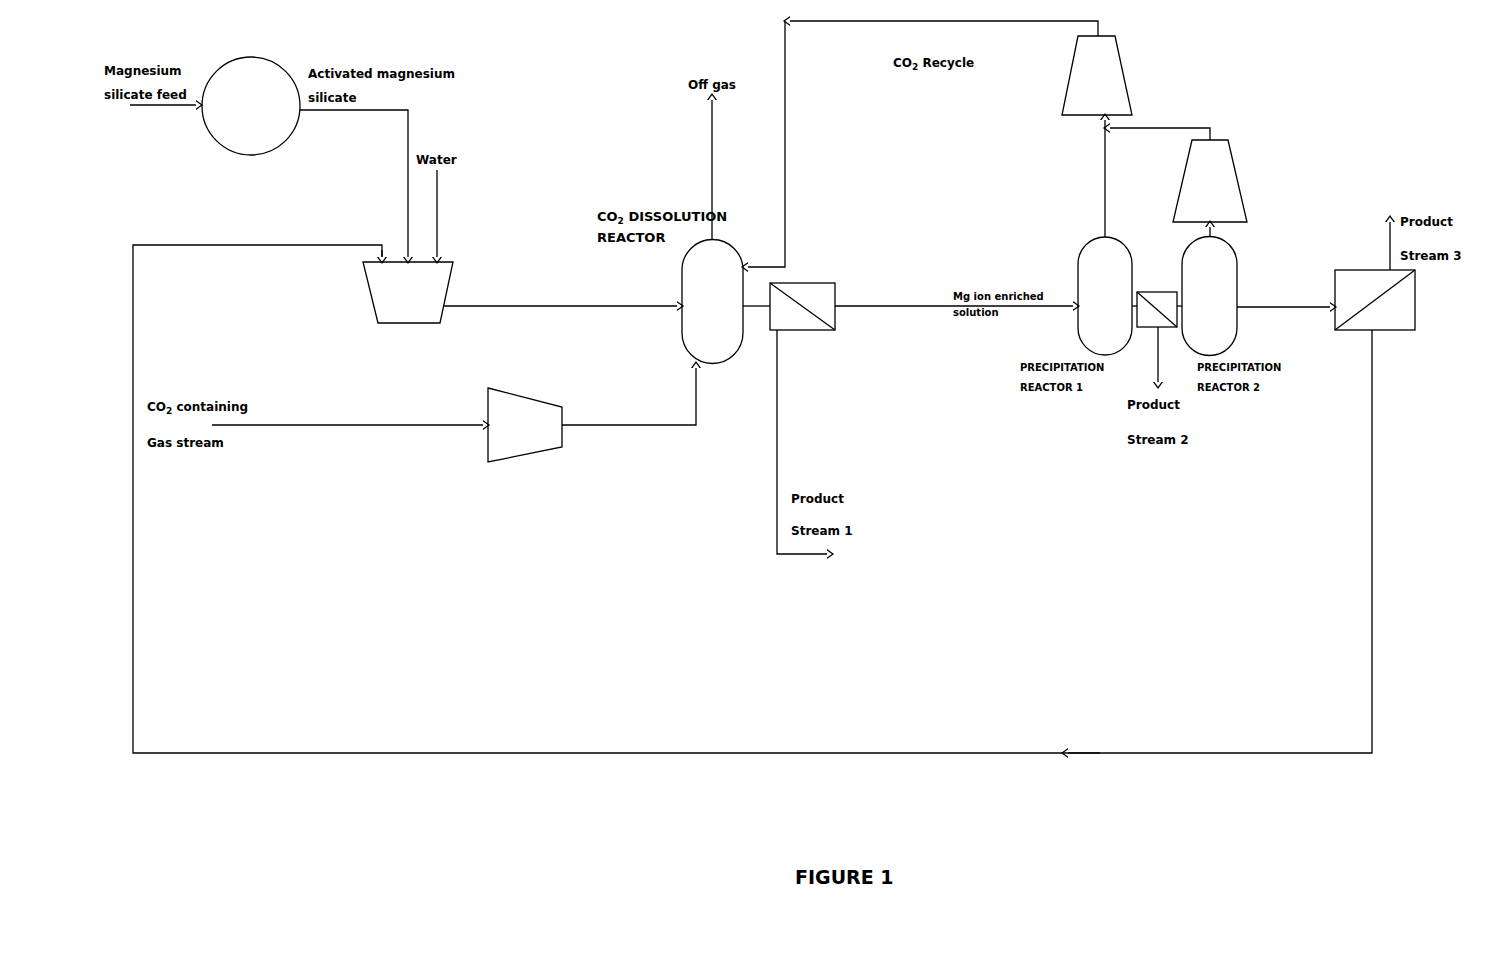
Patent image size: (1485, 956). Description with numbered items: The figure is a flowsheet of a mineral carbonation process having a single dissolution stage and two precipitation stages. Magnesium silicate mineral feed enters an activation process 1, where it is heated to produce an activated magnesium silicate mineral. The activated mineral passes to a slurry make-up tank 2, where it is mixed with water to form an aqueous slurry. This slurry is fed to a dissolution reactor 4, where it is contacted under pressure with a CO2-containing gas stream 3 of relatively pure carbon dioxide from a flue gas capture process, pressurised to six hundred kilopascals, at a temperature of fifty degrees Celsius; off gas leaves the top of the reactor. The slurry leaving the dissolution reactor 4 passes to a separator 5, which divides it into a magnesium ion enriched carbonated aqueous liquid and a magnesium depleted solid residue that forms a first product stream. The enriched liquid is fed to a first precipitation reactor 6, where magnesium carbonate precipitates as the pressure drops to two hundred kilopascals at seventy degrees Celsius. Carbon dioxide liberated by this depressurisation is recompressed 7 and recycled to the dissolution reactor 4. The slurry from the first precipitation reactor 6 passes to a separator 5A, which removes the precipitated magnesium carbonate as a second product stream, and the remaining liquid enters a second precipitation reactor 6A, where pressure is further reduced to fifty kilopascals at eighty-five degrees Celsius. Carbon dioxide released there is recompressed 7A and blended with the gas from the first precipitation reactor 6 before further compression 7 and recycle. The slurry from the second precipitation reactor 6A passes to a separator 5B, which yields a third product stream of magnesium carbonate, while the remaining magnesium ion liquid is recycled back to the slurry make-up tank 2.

The activation process 1 is at (251, 106).
The slurry make-up tank 2 is at (408, 292).
The CO2-containing gas stream 3 is at (525, 425).
The dissolution reactor 4 is at (712, 302).
The separator 5 is at (802, 306).
The separator 5A is at (1157, 309).
The separator 5B is at (1375, 300).
The first precipitation reactor 6 is at (1105, 296).
The second precipitation reactor 6A is at (1209, 295).
The recompression 7 is at (1097, 75).
The recompression 7A is at (1210, 181).